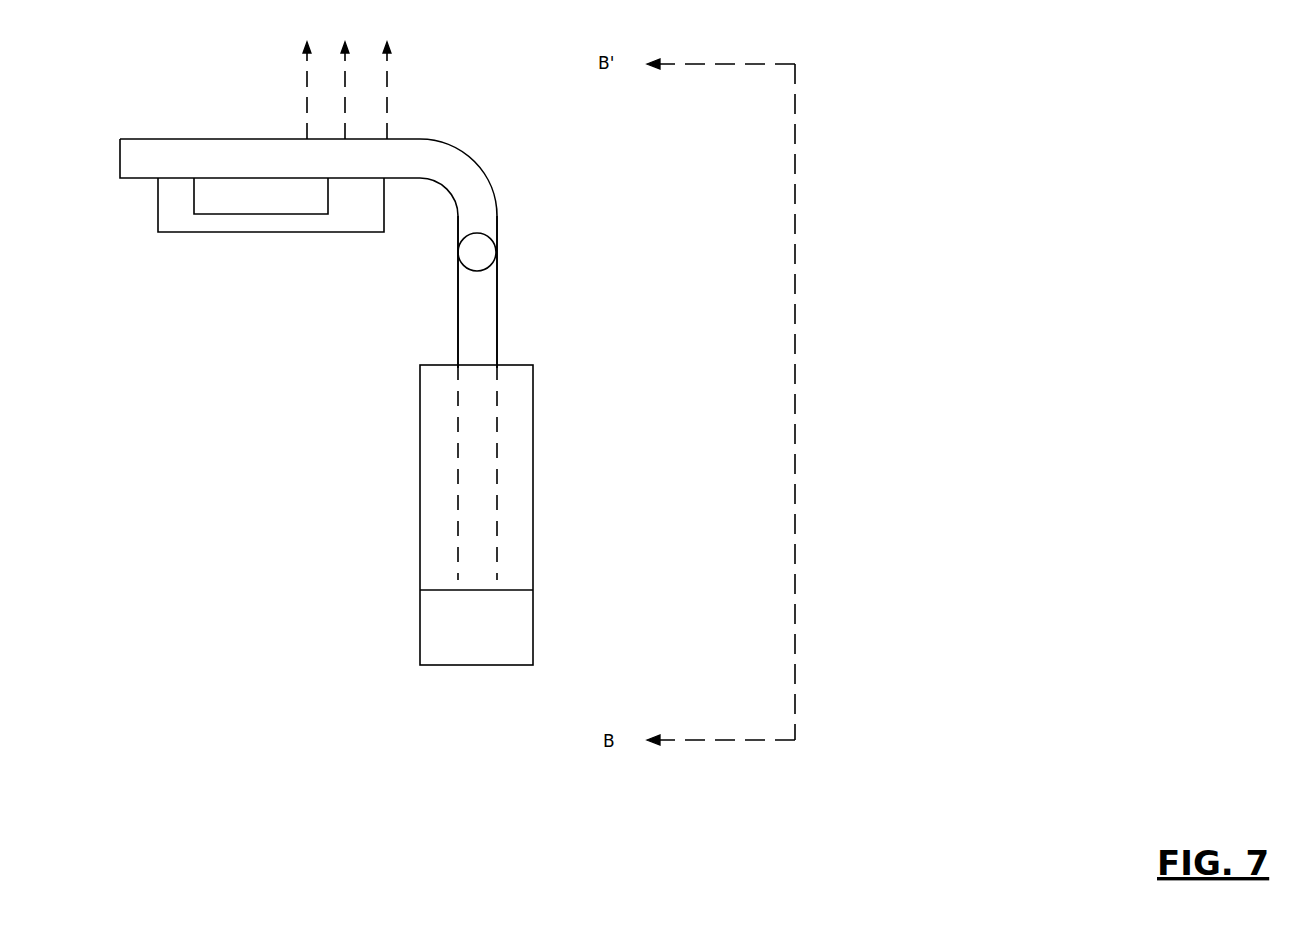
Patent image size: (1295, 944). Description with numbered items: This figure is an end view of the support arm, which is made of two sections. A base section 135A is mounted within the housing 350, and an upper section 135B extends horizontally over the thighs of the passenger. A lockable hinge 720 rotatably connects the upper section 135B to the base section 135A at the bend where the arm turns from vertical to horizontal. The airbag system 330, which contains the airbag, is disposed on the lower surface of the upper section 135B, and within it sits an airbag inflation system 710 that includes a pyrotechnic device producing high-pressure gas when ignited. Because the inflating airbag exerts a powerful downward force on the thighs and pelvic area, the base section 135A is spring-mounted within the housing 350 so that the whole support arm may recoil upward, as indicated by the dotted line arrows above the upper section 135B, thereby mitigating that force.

The upper section 135B is at (186, 138).
The base section 135A is at (497, 307).
The airbag system 330 is at (180, 233).
The airbag inflation system 710 is at (282, 215).
The lockable hinge 720 is at (485, 253).
The housing 350 is at (533, 440).